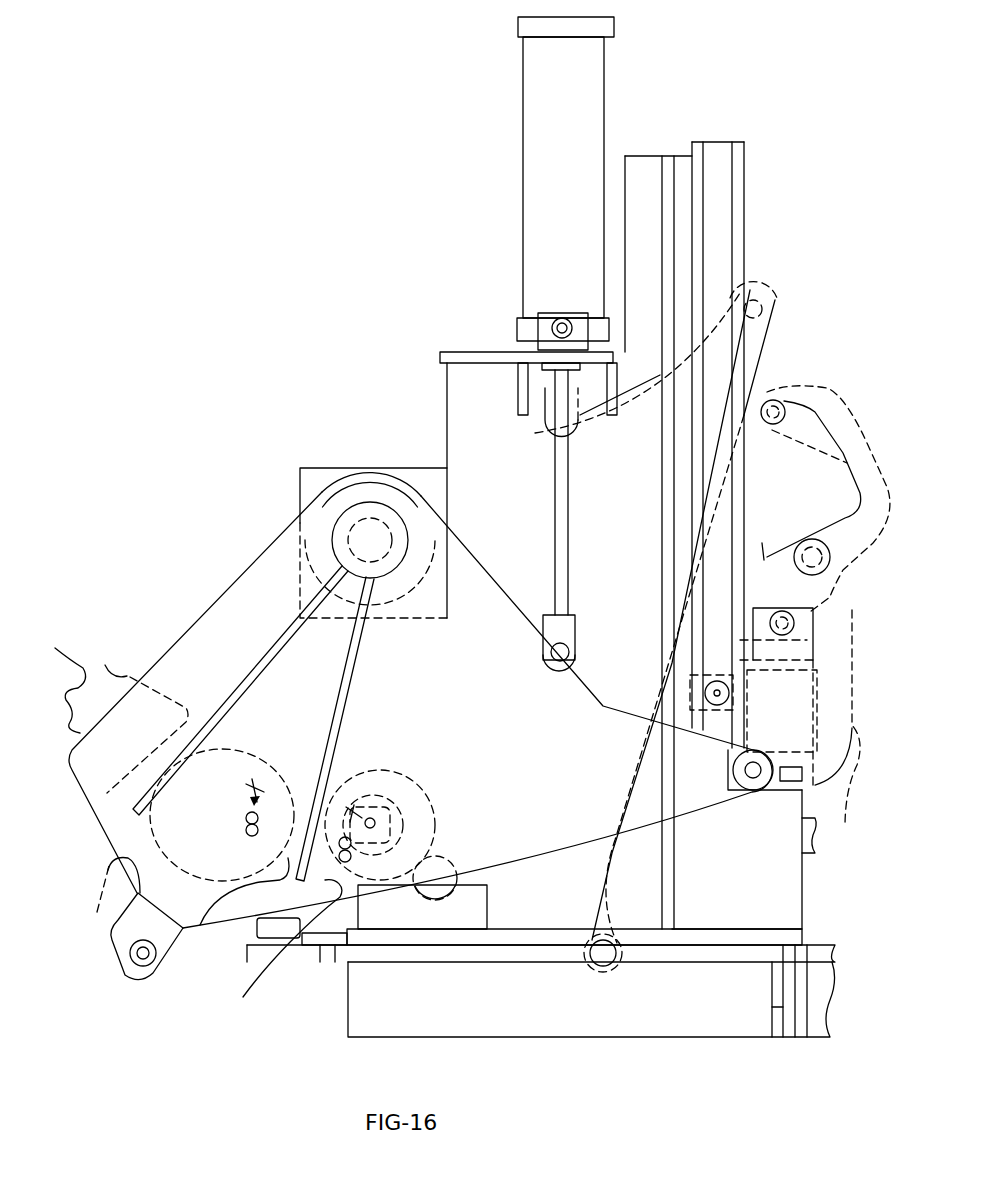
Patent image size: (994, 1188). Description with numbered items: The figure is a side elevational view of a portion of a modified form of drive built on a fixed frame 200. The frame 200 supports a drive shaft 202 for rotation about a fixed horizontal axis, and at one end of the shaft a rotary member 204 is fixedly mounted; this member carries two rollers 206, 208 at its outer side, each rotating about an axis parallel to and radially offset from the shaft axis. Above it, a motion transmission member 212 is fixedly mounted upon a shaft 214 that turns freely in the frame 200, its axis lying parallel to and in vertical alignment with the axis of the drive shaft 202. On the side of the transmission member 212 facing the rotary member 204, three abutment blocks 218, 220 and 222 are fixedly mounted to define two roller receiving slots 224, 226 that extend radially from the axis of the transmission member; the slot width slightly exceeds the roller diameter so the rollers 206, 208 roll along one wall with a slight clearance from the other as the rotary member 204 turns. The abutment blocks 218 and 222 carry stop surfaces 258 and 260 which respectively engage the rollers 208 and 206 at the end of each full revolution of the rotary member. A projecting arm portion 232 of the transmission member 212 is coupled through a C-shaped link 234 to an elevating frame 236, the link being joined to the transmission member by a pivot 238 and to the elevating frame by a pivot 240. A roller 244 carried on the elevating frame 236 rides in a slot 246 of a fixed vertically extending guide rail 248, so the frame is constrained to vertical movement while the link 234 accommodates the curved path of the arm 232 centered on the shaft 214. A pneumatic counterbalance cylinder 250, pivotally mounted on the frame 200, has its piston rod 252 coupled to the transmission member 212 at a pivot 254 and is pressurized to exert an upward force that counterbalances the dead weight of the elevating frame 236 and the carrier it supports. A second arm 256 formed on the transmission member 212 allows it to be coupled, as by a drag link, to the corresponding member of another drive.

The fixed frame 200 is at (346, 980).
The drive shaft 202 is at (383, 835).
The rotary member 204 is at (350, 830).
The roller 206 is at (317, 742).
The roller 208 is at (452, 897).
The motion transmission member 212 is at (237, 657).
The shaft 214 is at (367, 517).
The abutment block 218 is at (250, 983).
The abutment block 220 is at (87, 903).
The abutment block 222 is at (118, 671).
The roller receiving slot 224 is at (197, 933).
The roller receiving slot 226 is at (222, 815).
The projecting arm portion 232 is at (692, 806).
The C-shaped link 234 is at (845, 736).
The elevating frame 236 is at (817, 653).
The pivot 238 is at (750, 770).
The pivot 240 is at (822, 590).
The roller 244 is at (690, 705).
The slot 246 is at (722, 210).
The guide rail 248 is at (745, 166).
The pneumatic counterbalance cylinder 250 is at (530, 169).
The piston rod 252 is at (557, 514).
The pivot 254 is at (548, 660).
The second arm 256 is at (153, 978).
The stop surface 258 is at (404, 888).
The stop surface 260 is at (83, 675).